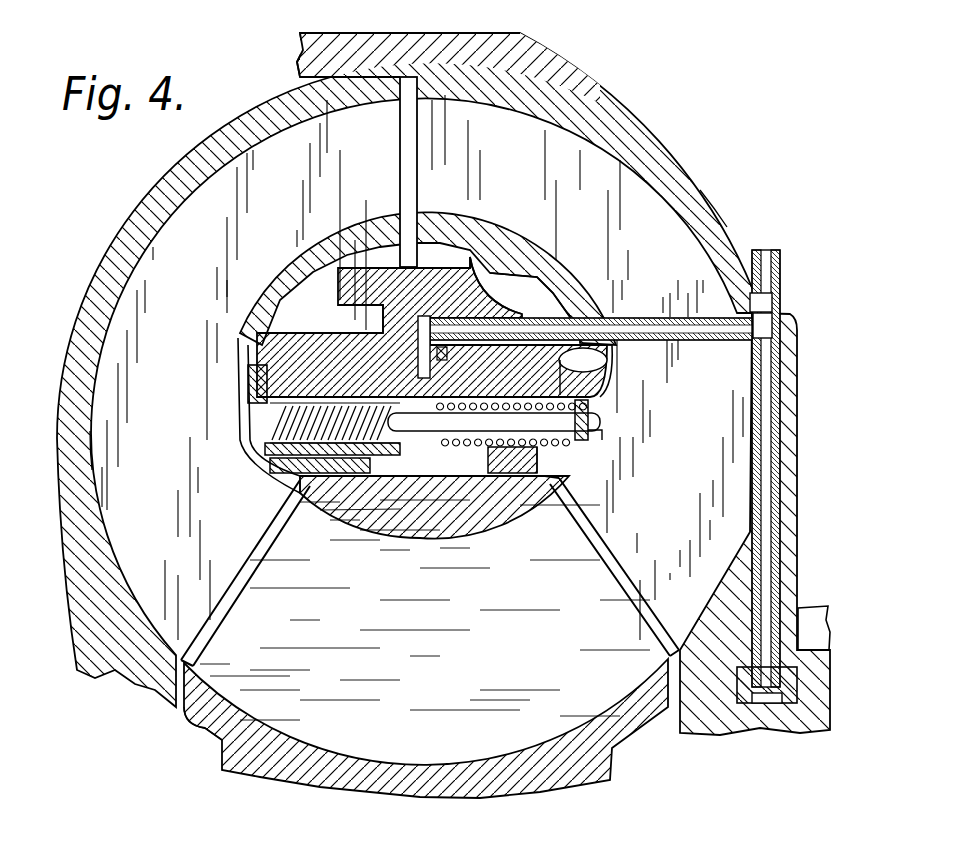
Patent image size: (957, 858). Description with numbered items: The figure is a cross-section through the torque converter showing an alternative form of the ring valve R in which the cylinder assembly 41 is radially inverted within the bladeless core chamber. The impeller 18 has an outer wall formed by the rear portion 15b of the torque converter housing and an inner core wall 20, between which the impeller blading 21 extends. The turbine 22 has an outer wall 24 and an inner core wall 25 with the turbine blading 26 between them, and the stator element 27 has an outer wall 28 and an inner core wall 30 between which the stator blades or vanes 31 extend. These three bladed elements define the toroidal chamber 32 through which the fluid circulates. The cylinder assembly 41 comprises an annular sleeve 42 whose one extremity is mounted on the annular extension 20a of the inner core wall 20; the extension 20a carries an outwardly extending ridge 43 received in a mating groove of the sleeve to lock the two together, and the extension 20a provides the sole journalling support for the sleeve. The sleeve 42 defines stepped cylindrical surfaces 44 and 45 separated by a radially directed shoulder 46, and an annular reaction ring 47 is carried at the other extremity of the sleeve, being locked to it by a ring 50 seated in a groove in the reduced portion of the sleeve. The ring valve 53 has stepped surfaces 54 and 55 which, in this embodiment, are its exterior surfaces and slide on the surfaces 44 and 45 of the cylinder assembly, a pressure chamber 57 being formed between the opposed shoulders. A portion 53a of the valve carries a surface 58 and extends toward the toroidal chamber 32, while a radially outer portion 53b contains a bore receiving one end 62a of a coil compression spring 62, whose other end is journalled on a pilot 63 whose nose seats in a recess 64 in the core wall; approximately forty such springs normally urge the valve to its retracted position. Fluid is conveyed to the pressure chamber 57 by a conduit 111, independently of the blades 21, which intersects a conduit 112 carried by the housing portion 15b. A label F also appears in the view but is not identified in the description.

The frame F is at (634, 102).
The impeller 18 is at (678, 143).
The rear portion of the torque converter housing 15b is at (705, 192).
The turbine 22 is at (143, 198).
The outer wall 24 is at (102, 261).
The turbine blading 26 is at (178, 376).
The inner core wall 25 is at (280, 294).
The inner core wall 20 is at (523, 250).
The annular extension 20a is at (428, 238).
The impeller blading 21 is at (618, 218).
The ring 50 is at (373, 280).
The cylinder assembly 41 is at (332, 330).
The outwardly extending ridge 43 is at (445, 262).
The annular sleeve 42 is at (482, 254).
The stepped cylindrical surface 45 is at (370, 297).
The annular reaction ring 47 is at (295, 348).
The radially directed shoulder 46 is at (440, 330).
The conduit 111 is at (530, 290).
The conduit 112 is at (750, 373).
The stepped cylindrical surface 44 is at (608, 356).
The stepped surface 54 is at (600, 382).
The ring valve 53 is at (262, 398).
The portion of the ring valve 53a is at (607, 393).
The portion of the ring valve 53b is at (325, 446).
The stepped surface 55 is at (253, 373).
The coil compression spring 62 is at (297, 466).
The end of spring 62a is at (267, 450).
The pressure chamber 57 is at (428, 435).
The surface 58 is at (466, 436).
The pilot 63 is at (517, 450).
The recess 64 is at (603, 425).
The ring valve R is at (607, 404).
The inner core wall 30 is at (403, 530).
The toroidal chamber 32 is at (200, 634).
The stator blades 31 is at (410, 660).
The stator element 27 is at (212, 742).
The outer wall 28 is at (400, 791).